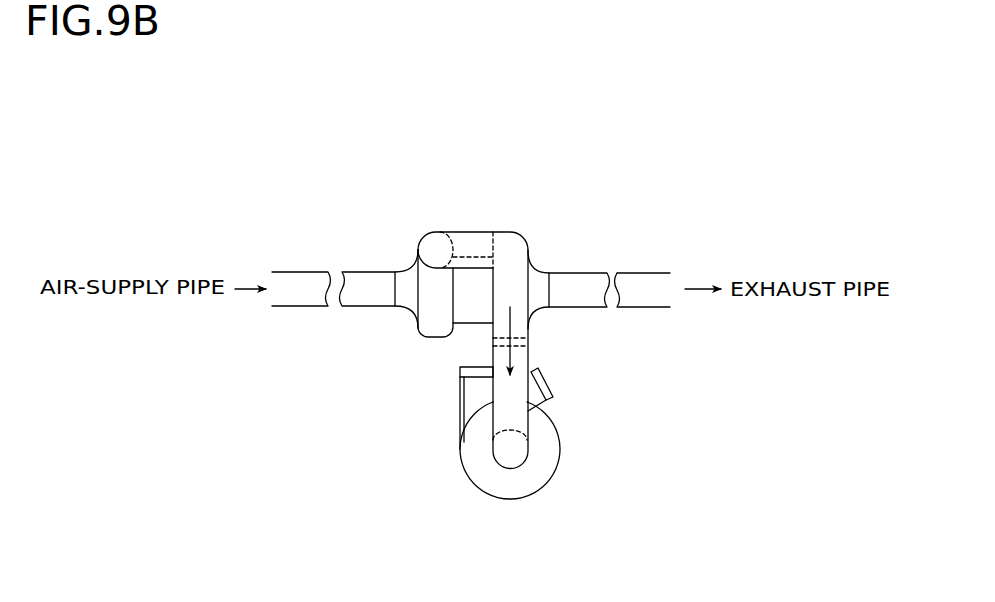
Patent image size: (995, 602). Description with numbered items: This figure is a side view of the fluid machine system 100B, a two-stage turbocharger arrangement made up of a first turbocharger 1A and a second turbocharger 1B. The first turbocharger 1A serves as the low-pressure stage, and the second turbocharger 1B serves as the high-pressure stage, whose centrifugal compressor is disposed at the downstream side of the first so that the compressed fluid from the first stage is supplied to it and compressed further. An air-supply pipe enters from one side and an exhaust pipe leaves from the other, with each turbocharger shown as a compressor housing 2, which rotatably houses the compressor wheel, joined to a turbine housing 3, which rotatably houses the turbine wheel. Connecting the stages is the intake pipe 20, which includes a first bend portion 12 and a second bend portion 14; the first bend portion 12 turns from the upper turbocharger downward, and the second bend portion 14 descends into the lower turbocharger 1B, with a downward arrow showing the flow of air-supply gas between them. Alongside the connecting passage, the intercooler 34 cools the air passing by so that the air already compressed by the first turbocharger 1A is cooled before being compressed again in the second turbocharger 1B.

The fluid machine system 100B is at (289, 163).
The first turbocharger 1A is at (399, 190).
The second turbocharger 1B is at (457, 499).
The intake pipe 20 is at (469, 228).
The first bend portion 12 is at (510, 253).
The second bend portion 14 is at (515, 417).
The intercooler 34 is at (472, 317).
The compressor housing 2 is at (408, 278).
The turbine housing 3 is at (537, 277).